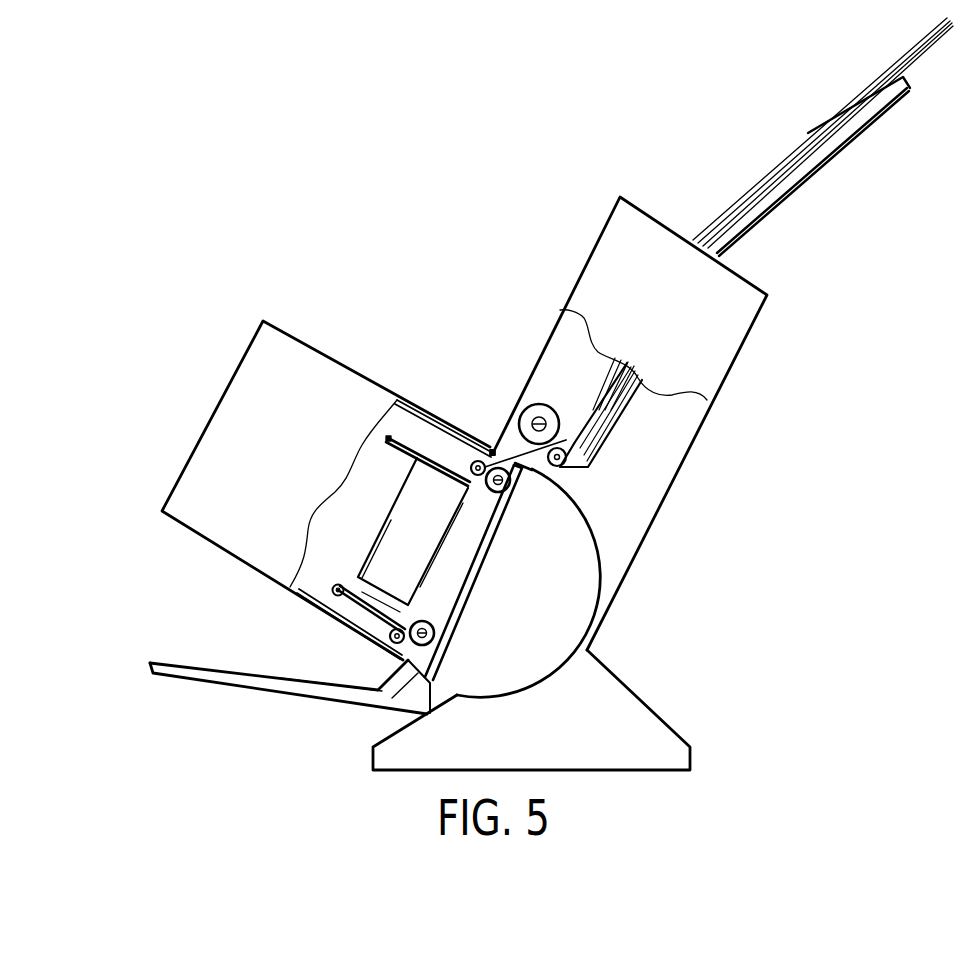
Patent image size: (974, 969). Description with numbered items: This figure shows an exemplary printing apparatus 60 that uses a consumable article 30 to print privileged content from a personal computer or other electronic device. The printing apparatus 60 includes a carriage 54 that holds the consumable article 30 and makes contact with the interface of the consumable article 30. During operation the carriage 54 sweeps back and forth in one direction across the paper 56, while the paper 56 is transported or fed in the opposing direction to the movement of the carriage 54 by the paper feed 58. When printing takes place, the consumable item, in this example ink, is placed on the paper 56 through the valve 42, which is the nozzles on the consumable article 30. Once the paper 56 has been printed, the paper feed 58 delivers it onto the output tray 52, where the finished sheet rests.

The consumable article 30 is at (407, 508).
The valve 42 is at (448, 535).
The output tray 52 is at (243, 677).
The carriage 54 is at (335, 583).
The paper 56 is at (697, 243).
The paper feed 58 is at (521, 416).
The printing apparatus 60 is at (600, 637).